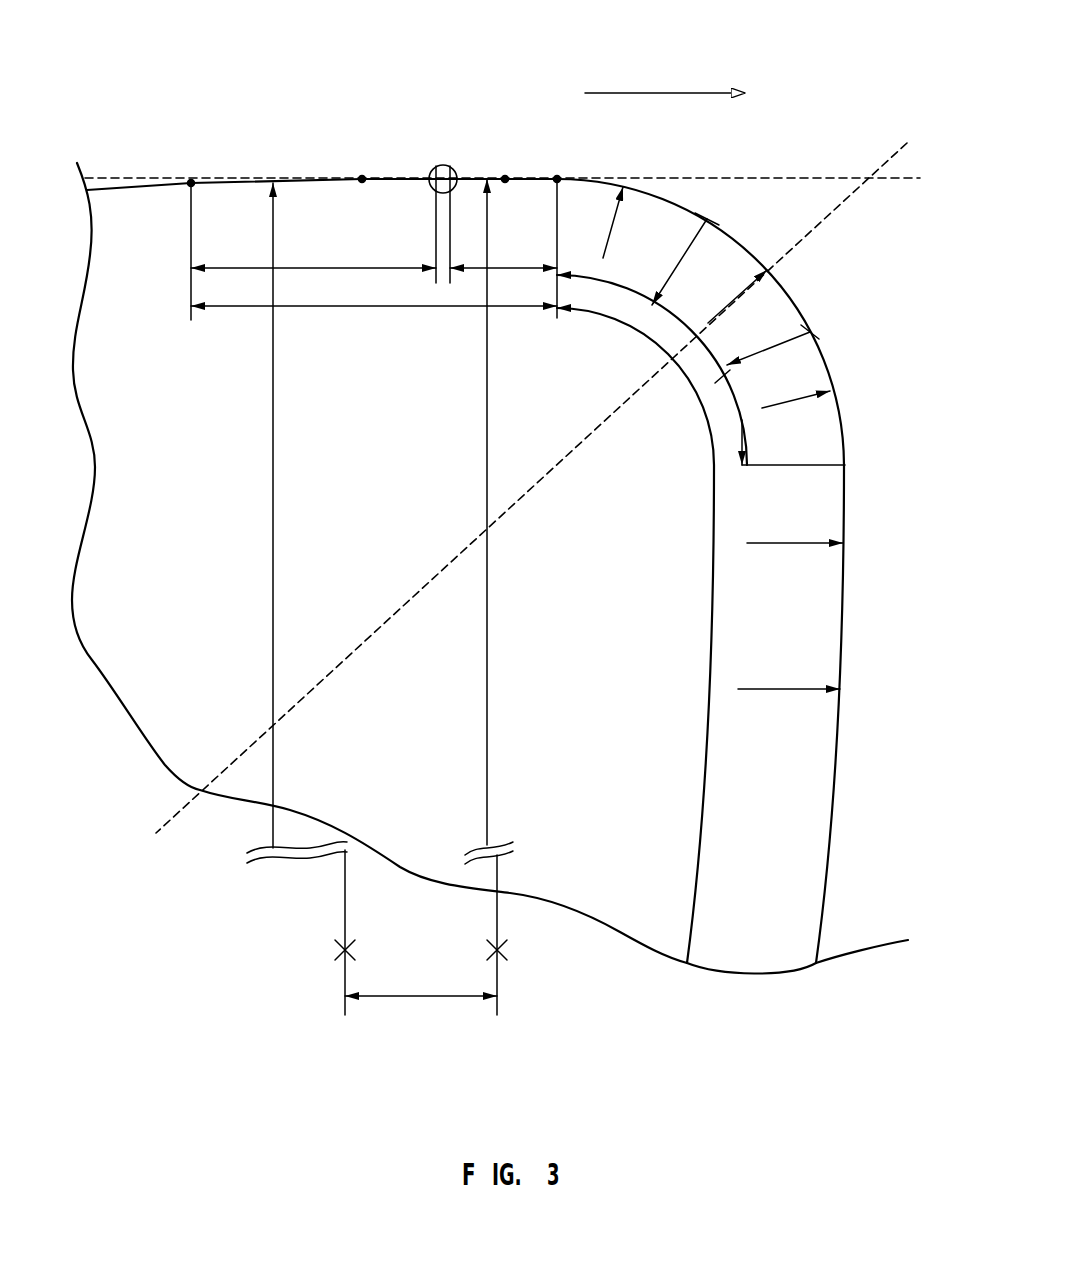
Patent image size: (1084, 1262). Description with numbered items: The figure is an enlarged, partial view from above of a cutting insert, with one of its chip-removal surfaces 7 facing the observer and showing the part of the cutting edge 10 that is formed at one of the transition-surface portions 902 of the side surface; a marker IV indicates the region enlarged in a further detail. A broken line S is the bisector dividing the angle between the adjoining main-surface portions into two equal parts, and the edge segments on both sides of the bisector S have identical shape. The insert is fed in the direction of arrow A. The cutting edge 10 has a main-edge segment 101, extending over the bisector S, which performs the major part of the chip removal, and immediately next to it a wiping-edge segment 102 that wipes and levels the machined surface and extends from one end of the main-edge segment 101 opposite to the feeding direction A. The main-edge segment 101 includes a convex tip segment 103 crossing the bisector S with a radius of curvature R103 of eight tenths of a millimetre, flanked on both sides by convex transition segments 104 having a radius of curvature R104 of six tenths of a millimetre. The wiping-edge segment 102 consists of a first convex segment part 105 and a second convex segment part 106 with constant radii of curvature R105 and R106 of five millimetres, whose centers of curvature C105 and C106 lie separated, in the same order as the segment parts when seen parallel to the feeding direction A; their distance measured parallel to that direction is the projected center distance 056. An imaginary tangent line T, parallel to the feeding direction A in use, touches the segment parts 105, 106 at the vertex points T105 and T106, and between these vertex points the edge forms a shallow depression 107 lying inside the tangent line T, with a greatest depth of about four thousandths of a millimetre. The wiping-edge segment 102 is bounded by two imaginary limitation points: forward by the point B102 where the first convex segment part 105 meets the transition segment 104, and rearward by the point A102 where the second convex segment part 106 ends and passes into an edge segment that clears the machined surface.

The chip-removal surface 7 is at (386, 516).
The cutting edge 10 is at (824, 901).
The main-edge segment 101 is at (713, 650).
The transition-surface portion 902 is at (856, 804).
The wiping-edge segment 102 is at (357, 308).
The tip segment 103 is at (722, 345).
The transition segment 104 is at (630, 289).
The first convex segment part 105 is at (507, 263).
The second convex segment part 106 is at (302, 268).
The depression 107 is at (452, 156).
The limitation point A102 is at (191, 183).
The limitation point B102 is at (557, 179).
The second vertex point T106 is at (362, 179).
The first vertex point T105 is at (505, 179).
The first center of curvature C105 is at (499, 952).
The second center of curvature C106 is at (342, 955).
The radius of curvature R103 is at (723, 289).
The radius of curvature R104 is at (695, 298).
The radius of curvature R105 is at (648, 512).
The radius of curvature R106 is at (537, 515).
The projected center distance 056 is at (421, 979).
The feeding direction arrow A is at (656, 93).
The tangent line T is at (778, 179).
The bisector S is at (882, 166).
The detail view marker IV is at (441, 166).